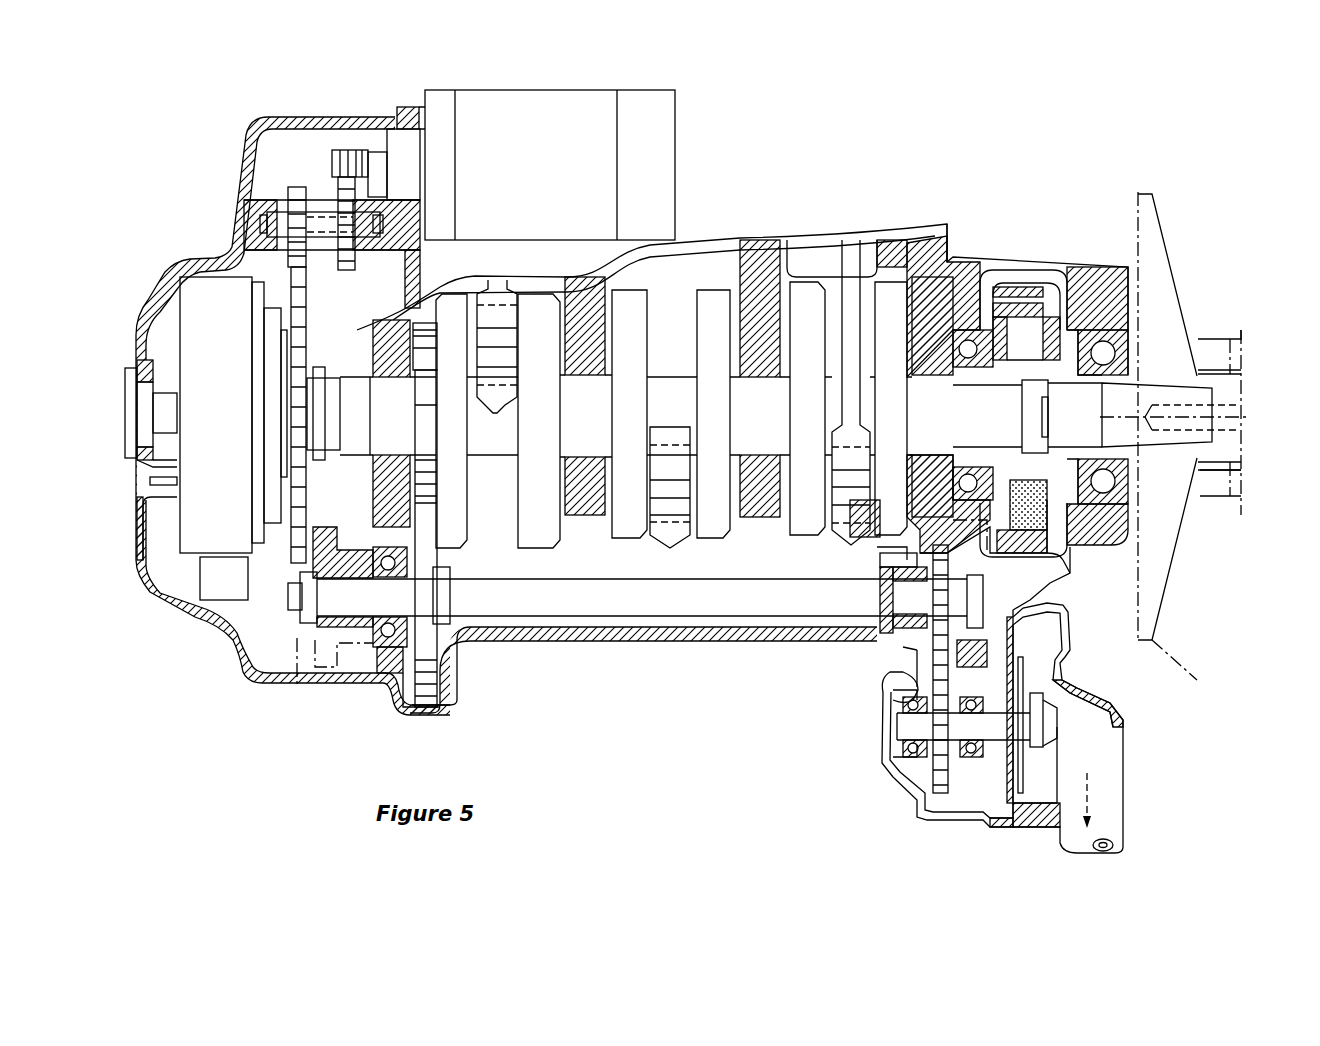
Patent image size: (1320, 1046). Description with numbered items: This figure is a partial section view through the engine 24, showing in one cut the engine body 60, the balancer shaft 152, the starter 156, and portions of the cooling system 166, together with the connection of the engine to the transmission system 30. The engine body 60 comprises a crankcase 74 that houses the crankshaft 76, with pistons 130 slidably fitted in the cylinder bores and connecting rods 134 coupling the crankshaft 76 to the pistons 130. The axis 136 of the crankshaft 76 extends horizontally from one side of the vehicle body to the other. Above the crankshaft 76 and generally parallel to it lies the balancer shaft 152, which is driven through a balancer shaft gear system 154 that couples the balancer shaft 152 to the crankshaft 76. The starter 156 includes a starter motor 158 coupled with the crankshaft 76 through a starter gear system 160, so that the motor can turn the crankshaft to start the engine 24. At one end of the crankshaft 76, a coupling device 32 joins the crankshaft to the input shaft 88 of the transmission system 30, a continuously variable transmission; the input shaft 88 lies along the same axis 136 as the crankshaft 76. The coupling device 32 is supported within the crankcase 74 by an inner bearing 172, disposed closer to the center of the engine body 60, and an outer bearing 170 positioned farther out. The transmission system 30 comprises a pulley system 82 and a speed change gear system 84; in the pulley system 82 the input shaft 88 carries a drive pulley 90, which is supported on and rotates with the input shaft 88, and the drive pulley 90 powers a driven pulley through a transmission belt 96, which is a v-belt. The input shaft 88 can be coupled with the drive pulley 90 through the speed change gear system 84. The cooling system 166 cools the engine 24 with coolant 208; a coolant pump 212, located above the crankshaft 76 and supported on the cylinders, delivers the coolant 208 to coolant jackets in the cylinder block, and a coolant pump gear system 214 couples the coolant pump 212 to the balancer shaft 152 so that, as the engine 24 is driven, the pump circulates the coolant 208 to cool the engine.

The engine 24 is at (1066, 134).
The transmission system 30 is at (1217, 197).
The coupling device 32 is at (1049, 556).
The engine body 60 is at (1052, 188).
The crankcase 74 is at (951, 257).
The crankshaft 76 is at (812, 290).
The pulley system 82 is at (1163, 207).
The speed change gear system 84 is at (1258, 672).
The input shaft 88 is at (1156, 450).
The drive pulley 90 is at (1160, 612).
The transmission belt 96 is at (1205, 498).
The pistons 130 is at (864, 237).
The connecting rods 134 is at (847, 333).
The axis 136 is at (1193, 416).
The balancer shaft 152 is at (640, 612).
The balancer shaft gear system 154 is at (437, 652).
The starter 156 is at (682, 121).
The starter motor 158 is at (536, 165).
The starter gear system 160 is at (298, 187).
The cooling system 166 is at (852, 760).
The outer bearing 170 is at (1092, 350).
The inner bearing 172 is at (967, 330).
The coolant 208 is at (1087, 797).
The coolant pump 212 is at (1124, 718).
The coolant pump gear system 214 is at (877, 668).